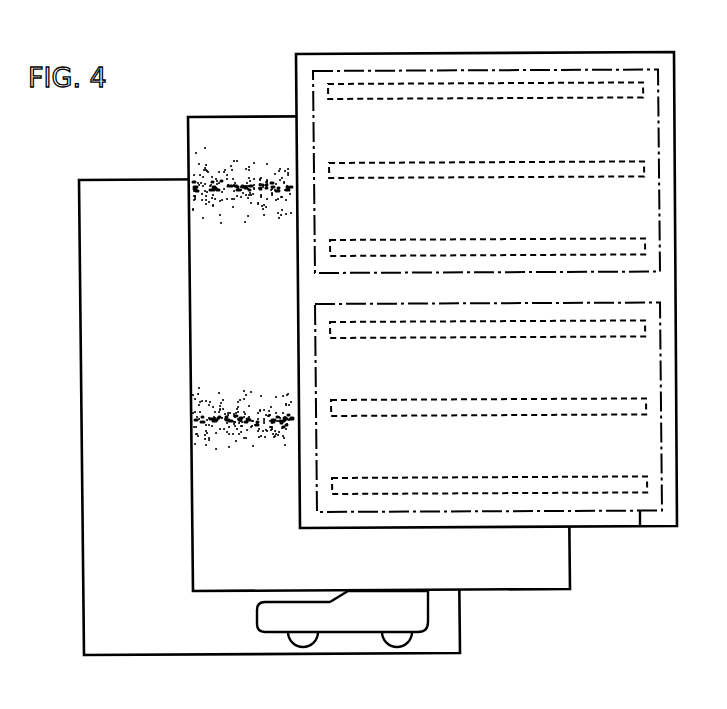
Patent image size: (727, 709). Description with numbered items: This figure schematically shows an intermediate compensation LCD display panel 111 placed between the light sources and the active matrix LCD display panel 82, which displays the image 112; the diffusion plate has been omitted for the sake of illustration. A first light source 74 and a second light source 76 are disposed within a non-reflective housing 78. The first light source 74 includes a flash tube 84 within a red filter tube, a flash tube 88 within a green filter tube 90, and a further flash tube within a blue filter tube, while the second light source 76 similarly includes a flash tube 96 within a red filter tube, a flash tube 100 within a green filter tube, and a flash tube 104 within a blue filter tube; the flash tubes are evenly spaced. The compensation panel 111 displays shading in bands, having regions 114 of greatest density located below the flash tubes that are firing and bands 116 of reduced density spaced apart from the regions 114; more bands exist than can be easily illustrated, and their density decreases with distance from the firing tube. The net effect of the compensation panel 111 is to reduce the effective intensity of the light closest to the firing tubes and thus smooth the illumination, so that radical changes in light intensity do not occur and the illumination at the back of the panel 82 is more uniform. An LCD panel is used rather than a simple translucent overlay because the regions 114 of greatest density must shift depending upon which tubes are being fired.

The first light source 74 is at (414, 70).
The second light source 76 is at (641, 528).
The non-reflective housing 78 is at (372, 54).
The active matrix LCD display panel 82 is at (84, 479).
The flash tube 84 is at (458, 100).
The flash tube 88 is at (446, 163).
The green filter tube 90 is at (542, 240).
The flash tube 96 is at (388, 338).
The flash tube 100 is at (430, 417).
The flash tube 104 is at (578, 478).
The compensation LCD display panel 111 is at (250, 117).
The image 112 is at (258, 619).
The regions of greatest density 114 is at (185, 190).
The bands of reduced density 116 is at (183, 153).